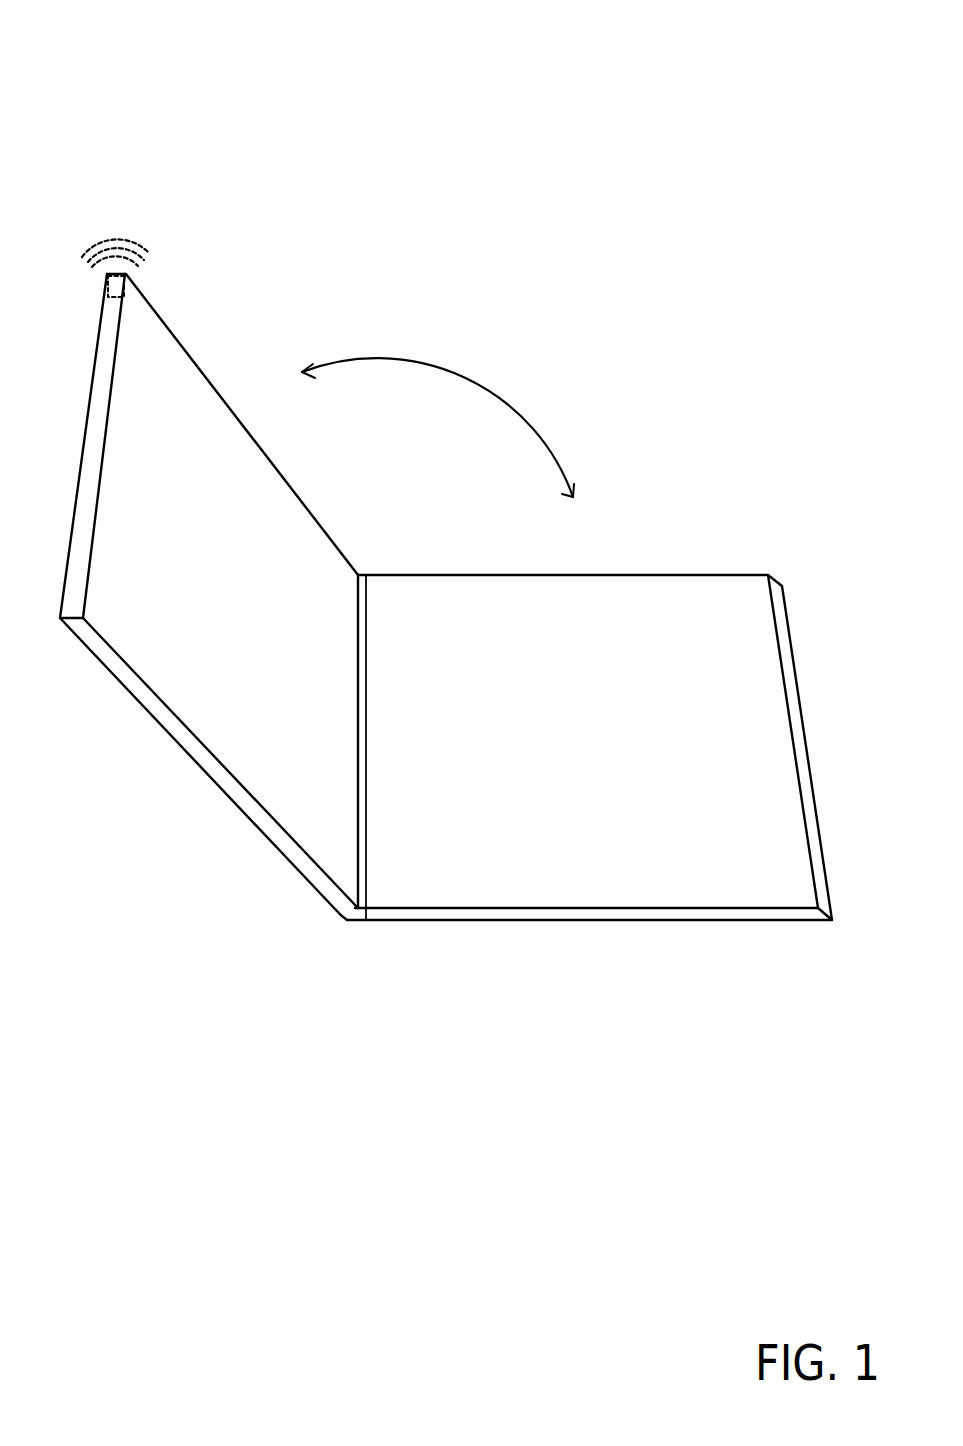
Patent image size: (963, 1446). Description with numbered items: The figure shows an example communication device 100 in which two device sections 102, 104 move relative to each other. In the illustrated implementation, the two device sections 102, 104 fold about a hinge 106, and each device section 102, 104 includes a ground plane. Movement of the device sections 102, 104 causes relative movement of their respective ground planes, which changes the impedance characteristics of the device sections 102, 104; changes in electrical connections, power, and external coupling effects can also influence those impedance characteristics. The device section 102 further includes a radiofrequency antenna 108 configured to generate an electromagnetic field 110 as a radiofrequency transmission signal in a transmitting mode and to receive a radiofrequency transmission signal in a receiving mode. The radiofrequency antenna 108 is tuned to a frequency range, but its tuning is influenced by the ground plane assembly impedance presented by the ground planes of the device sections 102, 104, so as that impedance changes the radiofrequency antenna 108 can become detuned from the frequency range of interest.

The communication device 100 is at (107, 48).
The device section 102 is at (209, 597).
The device section 104 is at (589, 747).
The hinge 106 is at (355, 920).
The radiofrequency antenna 108 is at (107, 292).
The electromagnetic field 110 is at (157, 237).